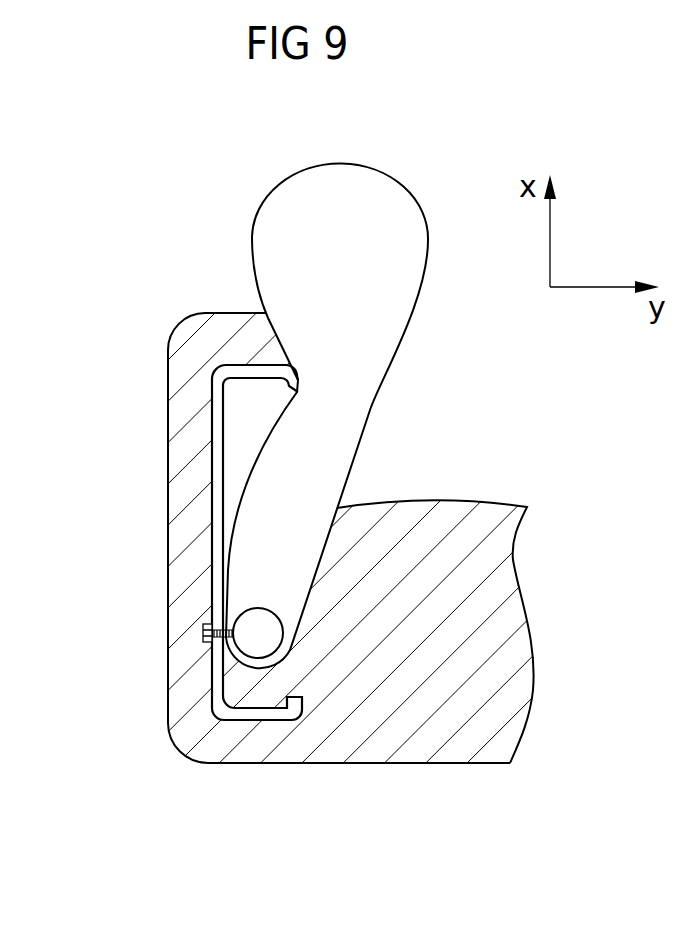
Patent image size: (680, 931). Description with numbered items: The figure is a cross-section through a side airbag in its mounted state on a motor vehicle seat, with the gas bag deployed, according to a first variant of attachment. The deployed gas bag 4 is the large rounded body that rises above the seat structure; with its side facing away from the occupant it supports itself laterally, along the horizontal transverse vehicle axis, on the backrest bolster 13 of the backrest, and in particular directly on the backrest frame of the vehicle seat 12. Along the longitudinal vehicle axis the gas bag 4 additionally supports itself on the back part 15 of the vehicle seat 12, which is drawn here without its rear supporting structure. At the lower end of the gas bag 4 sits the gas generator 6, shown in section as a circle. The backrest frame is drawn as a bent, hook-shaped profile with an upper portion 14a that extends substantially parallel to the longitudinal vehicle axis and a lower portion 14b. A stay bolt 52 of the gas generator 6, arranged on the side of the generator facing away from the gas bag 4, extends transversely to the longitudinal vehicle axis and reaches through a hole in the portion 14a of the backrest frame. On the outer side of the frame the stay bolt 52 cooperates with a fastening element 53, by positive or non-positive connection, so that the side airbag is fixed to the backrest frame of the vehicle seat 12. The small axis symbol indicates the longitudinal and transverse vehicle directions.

The gas bag 4 is at (405, 330).
The gas generator 6 is at (260, 622).
The vehicle seat 12 is at (388, 765).
The backrest bolster 13 is at (198, 335).
The portion of the backrest frame 14a is at (222, 450).
The lower clip leg 14b is at (260, 713).
The back part 15 is at (430, 520).
The stay bolt 52 is at (211, 648).
The fastening element 53 is at (203, 628).